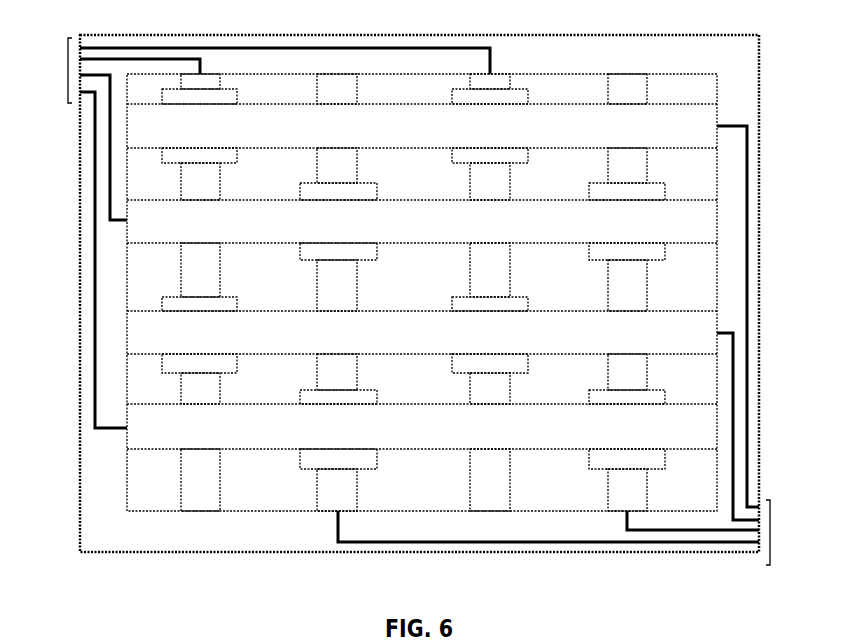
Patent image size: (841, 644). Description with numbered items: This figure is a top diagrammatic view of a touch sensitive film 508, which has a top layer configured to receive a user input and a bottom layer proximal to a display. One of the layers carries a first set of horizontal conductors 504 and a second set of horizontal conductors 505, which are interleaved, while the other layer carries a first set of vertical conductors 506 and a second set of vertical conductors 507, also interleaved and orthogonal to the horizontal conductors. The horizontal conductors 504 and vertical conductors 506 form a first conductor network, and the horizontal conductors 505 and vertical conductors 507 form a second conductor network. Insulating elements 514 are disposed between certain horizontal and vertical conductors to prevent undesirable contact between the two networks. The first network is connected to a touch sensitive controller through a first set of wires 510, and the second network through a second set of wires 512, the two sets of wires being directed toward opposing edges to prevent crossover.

The first set of horizontal conductors 504 is at (710, 109).
The second set of horizontal conductors 505 is at (283, 211).
The first set of vertical conductors 506 is at (327, 505).
The second set of vertical conductors 507 is at (200, 503).
The touch sensitive film 508 is at (698, 79).
The first set of wires 510 is at (770, 537).
The second set of wires 512 is at (67, 73).
The insulating elements 514 is at (453, 298).